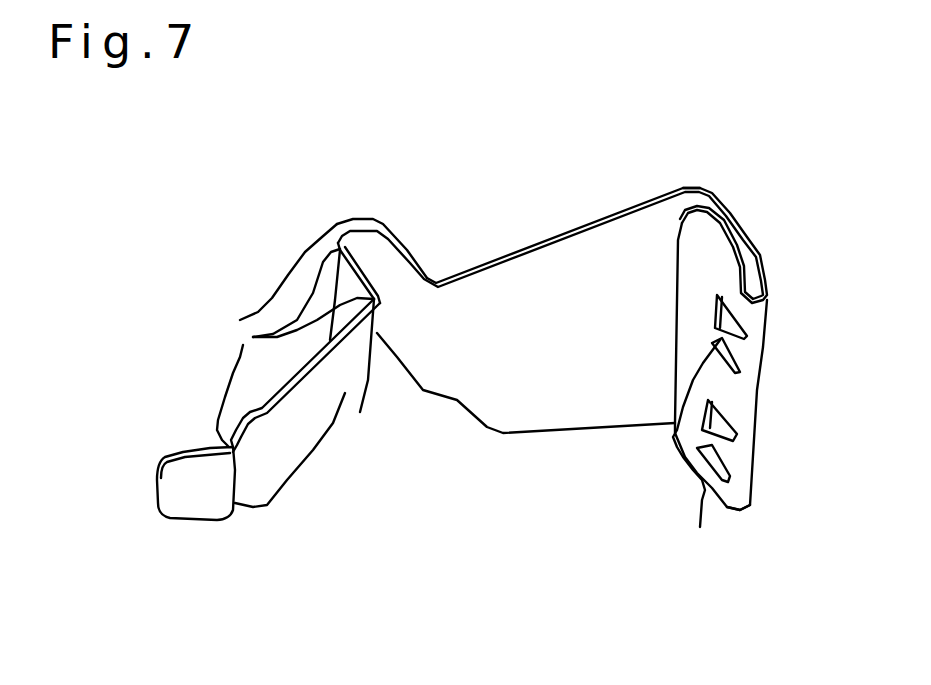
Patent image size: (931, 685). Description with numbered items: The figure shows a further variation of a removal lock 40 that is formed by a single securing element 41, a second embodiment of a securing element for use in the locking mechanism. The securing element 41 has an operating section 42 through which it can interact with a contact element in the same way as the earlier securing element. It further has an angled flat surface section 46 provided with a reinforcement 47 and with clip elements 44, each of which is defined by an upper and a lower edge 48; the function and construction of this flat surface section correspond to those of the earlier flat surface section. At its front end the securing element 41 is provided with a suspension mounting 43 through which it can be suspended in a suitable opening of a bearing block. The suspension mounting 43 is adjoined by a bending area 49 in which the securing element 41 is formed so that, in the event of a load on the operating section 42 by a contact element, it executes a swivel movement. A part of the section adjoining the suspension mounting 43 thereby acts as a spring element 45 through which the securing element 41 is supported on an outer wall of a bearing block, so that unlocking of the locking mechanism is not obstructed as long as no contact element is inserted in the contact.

The removal lock 40 is at (372, 186).
The securing element 41 is at (588, 256).
The operating section 42 is at (502, 284).
The suspension mounting 43 is at (219, 483).
The clip elements 44 is at (708, 400).
The spring element 45 is at (347, 392).
The angled flat surface section 46 is at (740, 228).
The reinforcement 47 is at (713, 278).
The upper and lower edge 48 is at (732, 218).
The bending area 49 is at (278, 403).